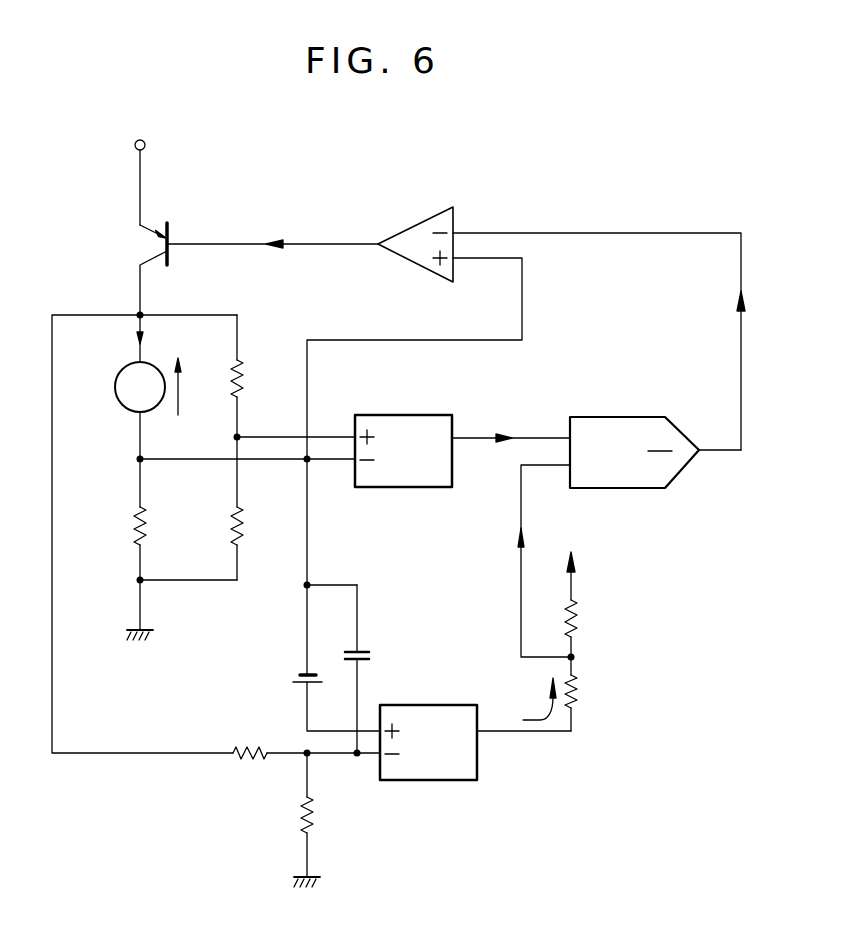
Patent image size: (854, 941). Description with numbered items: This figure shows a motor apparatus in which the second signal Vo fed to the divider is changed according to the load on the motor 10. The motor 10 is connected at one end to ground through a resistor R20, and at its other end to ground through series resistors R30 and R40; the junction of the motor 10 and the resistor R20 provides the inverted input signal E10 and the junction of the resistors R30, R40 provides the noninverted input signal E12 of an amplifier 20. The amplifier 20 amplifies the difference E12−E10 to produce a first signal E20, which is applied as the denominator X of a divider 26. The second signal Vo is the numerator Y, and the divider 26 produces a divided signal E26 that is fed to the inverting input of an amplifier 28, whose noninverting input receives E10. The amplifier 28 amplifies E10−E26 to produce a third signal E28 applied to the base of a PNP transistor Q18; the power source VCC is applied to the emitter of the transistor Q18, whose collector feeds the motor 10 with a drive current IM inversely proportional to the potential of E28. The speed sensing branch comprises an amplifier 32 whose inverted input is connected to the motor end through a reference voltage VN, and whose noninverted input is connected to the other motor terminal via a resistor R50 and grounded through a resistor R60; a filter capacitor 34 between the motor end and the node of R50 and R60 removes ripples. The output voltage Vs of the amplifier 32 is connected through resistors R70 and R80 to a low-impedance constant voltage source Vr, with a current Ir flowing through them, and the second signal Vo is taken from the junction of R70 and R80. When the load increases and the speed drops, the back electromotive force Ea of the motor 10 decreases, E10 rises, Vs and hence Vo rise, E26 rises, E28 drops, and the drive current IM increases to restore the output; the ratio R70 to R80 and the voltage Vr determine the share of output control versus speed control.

The motor 10 is at (122, 370).
The amplifier 20 is at (412, 415).
The divider 26 is at (622, 418).
The amplifier 28 is at (412, 232).
The amplifier 32 is at (440, 782).
The filter capacitor 34 is at (370, 652).
The PNP transistor Q18 is at (152, 228).
The power source VCC is at (142, 169).
The drive current IM is at (138, 333).
The back electromotive force Ea is at (183, 375).
The third signal E28 is at (321, 243).
The divided signal E26 is at (741, 345).
The first signal E20 is at (535, 436).
The noninverted input signal E12 is at (240, 440).
The inverted input signal E10 is at (310, 462).
The resistor R20 is at (146, 530).
The resistor R30 is at (243, 389).
The resistor R40 is at (243, 530).
The resistor R50 is at (242, 747).
The resistor R60 is at (312, 822).
The resistor R70 is at (577, 686).
The resistor R80 is at (577, 614).
The reference voltage VN is at (297, 680).
The second signal Vo is at (521, 588).
The constant voltage source Vr is at (573, 563).
The current Ir is at (534, 699).
The output voltage Vs is at (528, 735).